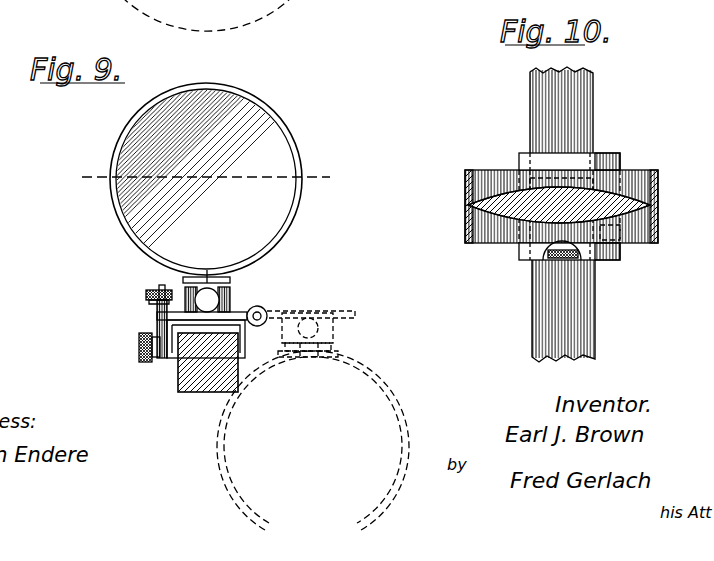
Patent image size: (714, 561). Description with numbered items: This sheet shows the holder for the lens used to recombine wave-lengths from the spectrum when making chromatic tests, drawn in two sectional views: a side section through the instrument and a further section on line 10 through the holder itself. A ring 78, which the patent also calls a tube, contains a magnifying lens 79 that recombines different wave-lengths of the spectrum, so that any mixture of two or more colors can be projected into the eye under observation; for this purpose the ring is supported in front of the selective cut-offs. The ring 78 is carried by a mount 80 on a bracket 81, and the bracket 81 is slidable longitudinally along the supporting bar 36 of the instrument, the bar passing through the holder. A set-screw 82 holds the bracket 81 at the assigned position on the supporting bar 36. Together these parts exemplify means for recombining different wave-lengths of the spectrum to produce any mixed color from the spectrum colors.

In FIG. 9, the section line of Fig. 10 is at (203, 180).
In FIG. 9, the supporting bar 36 is at (180, 390).
In FIG. 10, the supporting bar 36 is at (536, 330).
In FIG. 9, the ring 78 is at (137, 252).
In FIG. 10, the ring 78 is at (468, 238).
In FIG. 9, the magnifying lens 79 is at (200, 200).
In FIG. 10, the magnifying lens 79 is at (470, 207).
In FIG. 9, the mount 80 is at (220, 304).
In FIG. 9, the bracket 81 is at (243, 342).
In FIG. 10, the bracket 81 is at (519, 158).
In FIG. 9, the set-screw 82 is at (139, 342).